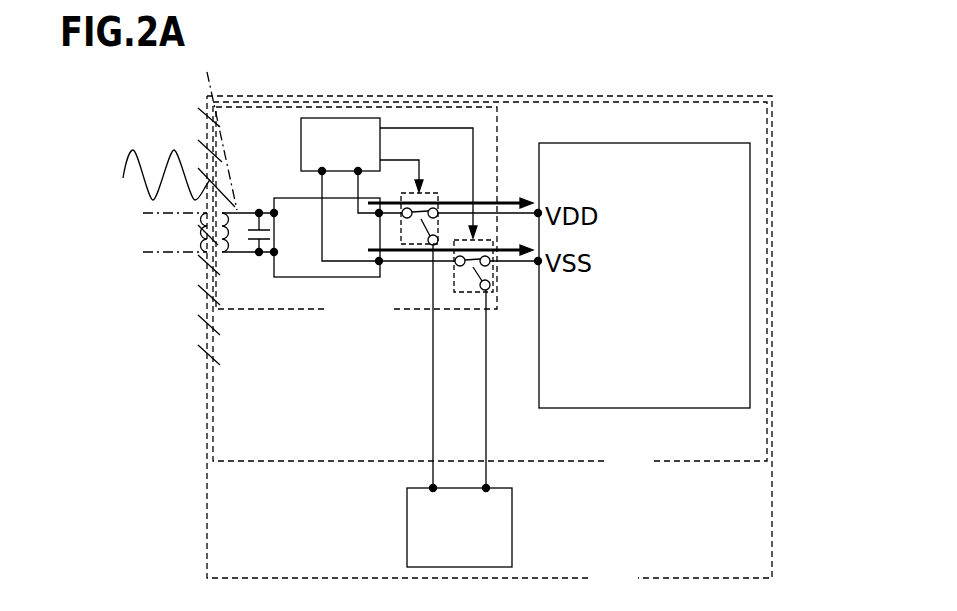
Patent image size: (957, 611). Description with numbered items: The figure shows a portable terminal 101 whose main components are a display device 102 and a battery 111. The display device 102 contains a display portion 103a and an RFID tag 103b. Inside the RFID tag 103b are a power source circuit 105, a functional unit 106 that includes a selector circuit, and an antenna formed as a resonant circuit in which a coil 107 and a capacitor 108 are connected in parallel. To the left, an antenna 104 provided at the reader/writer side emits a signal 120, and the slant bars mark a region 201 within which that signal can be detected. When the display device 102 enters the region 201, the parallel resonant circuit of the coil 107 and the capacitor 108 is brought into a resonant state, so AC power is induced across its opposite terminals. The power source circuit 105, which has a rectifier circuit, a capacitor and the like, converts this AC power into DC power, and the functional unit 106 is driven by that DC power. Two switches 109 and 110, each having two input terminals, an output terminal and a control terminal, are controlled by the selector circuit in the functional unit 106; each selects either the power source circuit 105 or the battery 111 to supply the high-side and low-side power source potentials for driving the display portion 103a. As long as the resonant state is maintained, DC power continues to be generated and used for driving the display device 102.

The portable terminal 101 is at (489, 344).
The display device 102 is at (490, 287).
The display portion 103a is at (644, 275).
The RFID tag 103b is at (356, 214).
The antenna 104 is at (200, 254).
The power source circuit 105 is at (328, 237).
The functional unit 106 is at (389, 189).
The coil 107 is at (236, 278).
The capacitor 108 is at (259, 210).
The switch 109 is at (440, 195).
The switch 110 is at (457, 293).
The battery 111 is at (459, 526).
The signal 120 is at (166, 160).
The region 201 is at (203, 363).